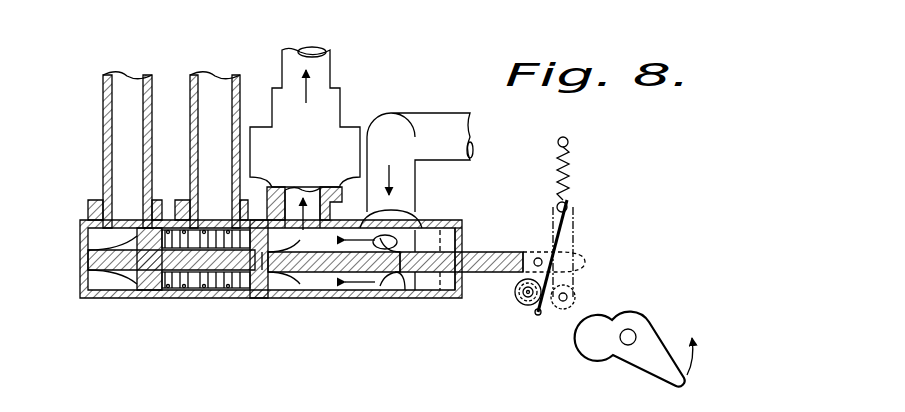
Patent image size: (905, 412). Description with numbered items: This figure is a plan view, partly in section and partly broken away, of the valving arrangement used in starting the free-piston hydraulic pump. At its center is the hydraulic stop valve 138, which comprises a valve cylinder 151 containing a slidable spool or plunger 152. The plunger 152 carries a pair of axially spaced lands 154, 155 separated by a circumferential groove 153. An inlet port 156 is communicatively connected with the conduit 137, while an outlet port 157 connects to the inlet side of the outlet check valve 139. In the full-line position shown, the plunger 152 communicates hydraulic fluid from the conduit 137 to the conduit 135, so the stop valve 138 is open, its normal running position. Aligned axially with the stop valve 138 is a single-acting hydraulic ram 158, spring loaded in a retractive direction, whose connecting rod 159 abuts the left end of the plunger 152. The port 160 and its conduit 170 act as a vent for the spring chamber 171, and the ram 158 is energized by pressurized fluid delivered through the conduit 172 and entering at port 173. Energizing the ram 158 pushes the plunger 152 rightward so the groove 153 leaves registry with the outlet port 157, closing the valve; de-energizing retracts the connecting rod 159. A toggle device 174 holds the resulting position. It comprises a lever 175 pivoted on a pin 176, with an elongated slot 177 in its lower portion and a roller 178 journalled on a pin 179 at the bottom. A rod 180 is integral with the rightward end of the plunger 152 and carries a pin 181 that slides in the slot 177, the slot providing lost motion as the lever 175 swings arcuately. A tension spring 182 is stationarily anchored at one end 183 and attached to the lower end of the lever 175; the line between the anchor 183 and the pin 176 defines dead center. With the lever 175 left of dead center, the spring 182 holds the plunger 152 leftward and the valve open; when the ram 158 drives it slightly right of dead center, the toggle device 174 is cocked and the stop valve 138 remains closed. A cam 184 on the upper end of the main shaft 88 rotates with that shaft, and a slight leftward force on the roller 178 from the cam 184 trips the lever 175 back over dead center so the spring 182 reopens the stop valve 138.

The main shaft 88 is at (622, 338).
The conduit 135 is at (320, 70).
The conduit 137 is at (440, 122).
The hydraulic stop valve 138 is at (456, 228).
The outlet check valve 139 is at (346, 92).
The valve cylinder 151 is at (460, 300).
The spool or plunger 152 is at (270, 296).
The circumferential groove 153 is at (322, 286).
The land 154 is at (297, 297).
The land 155 is at (405, 296).
The inlet port 156 is at (398, 238).
The outlet port 157 is at (288, 196).
The hydraulic ram 158 is at (138, 296).
The connecting rod 159 is at (226, 296).
The port 160 is at (200, 222).
The conduit 170 is at (190, 88).
The spring chamber 171 is at (172, 296).
The conduit 172 is at (103, 100).
The port 173 is at (120, 222).
The toggle device 174 is at (590, 234).
The lever 175 is at (547, 236).
The pin 176 is at (568, 206).
The elongated slot 177 is at (539, 306).
The roller 178 is at (515, 294).
The pin 179 is at (522, 300).
The rod 180 is at (466, 258).
The pin 181 is at (534, 260).
The tension spring 182 is at (556, 190).
The spring anchor 183 is at (568, 142).
The cam 184 is at (650, 340).